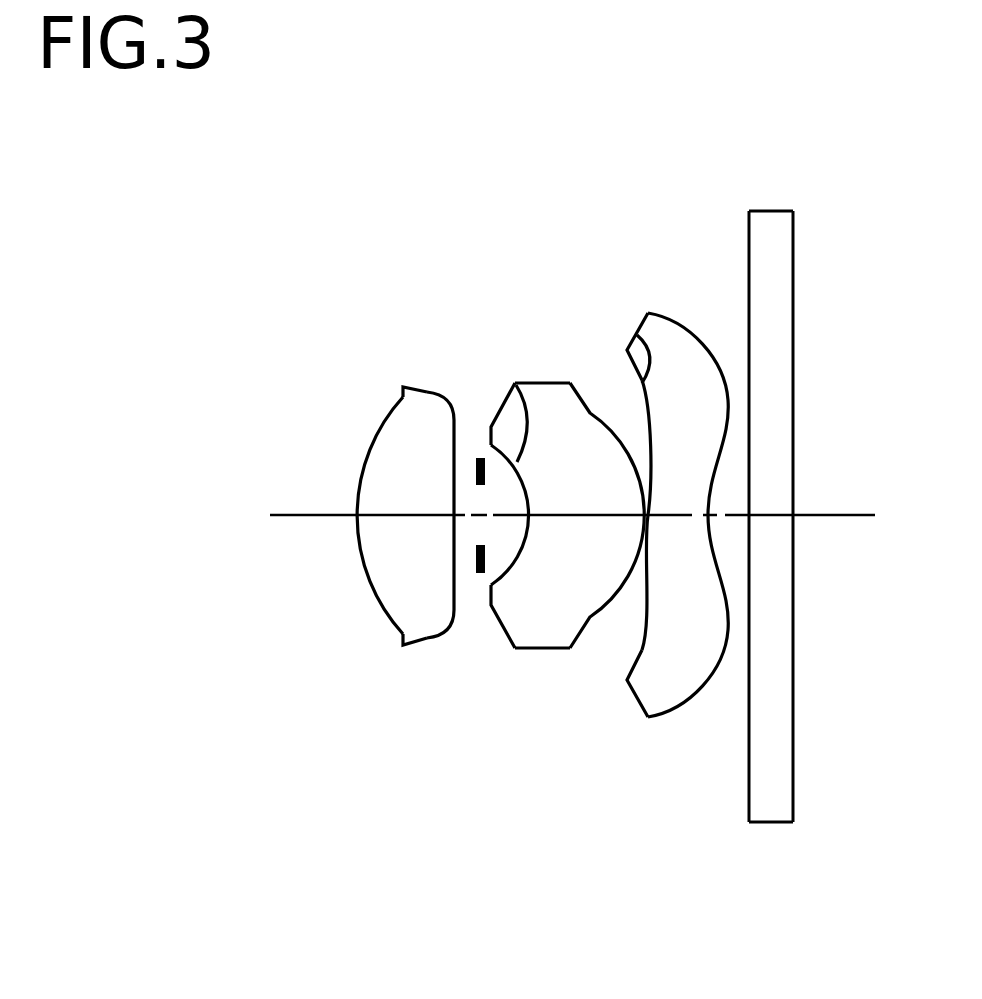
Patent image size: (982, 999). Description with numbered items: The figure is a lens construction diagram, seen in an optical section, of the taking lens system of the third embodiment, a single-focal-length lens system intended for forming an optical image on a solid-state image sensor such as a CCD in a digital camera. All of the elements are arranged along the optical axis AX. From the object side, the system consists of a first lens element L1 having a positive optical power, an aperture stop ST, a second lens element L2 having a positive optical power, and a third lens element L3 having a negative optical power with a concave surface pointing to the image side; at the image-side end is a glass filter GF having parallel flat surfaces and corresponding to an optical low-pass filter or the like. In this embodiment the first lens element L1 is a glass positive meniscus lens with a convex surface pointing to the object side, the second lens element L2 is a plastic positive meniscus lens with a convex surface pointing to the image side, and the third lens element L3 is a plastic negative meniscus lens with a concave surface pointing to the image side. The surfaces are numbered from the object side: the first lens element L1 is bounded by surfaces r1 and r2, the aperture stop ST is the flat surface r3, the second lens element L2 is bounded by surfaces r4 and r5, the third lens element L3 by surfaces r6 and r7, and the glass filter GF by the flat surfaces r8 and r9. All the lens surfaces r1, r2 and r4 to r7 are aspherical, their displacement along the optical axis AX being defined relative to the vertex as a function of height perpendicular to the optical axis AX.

The object-side surface of first lens element r1 is at (360, 476).
The image-side surface of first lens element r2 is at (430, 391).
The aperture stop ST is at (479, 418).
The aperture stop surface r3 is at (475, 457).
The object-side surface of second lens element r4 is at (528, 421).
The image-side surface of second lens element r5 is at (600, 420).
The object-side surface of third lens element r6 is at (637, 336).
The image-side surface of third lens element r7 is at (690, 326).
The object-side surface of glass filter r8 is at (749, 250).
The image-side surface of glass filter r9 is at (793, 250).
The first lens element L1 is at (365, 518).
The second lens element L2 is at (566, 518).
The third lens element L3 is at (646, 500).
The glass filter GF is at (749, 490).
The optical axis AX is at (823, 517).